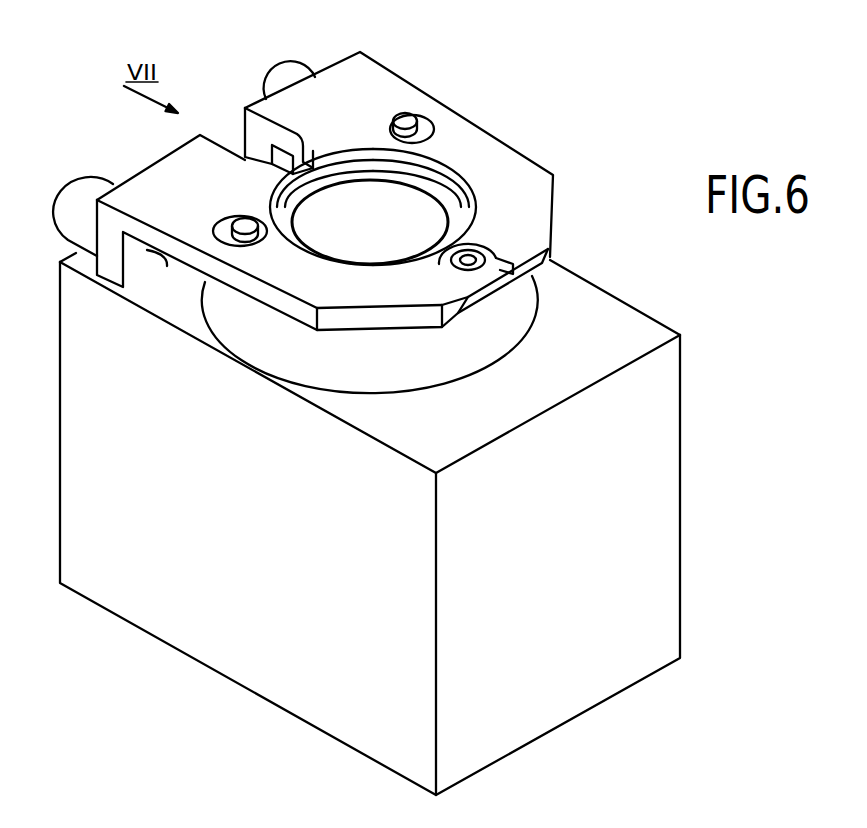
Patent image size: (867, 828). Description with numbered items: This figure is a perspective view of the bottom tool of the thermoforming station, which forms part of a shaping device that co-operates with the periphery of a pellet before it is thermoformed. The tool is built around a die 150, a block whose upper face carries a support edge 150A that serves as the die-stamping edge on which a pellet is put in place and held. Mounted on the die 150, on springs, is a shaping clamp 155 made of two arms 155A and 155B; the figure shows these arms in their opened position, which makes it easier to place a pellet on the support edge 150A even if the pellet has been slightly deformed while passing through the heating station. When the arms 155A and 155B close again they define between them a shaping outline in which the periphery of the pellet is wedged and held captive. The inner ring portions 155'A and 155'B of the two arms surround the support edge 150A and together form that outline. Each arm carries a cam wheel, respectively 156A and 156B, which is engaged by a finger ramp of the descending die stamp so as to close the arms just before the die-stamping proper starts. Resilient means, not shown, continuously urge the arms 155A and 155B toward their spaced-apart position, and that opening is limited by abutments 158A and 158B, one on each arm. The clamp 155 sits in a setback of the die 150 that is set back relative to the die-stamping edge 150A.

The die 150 is at (657, 515).
The support edge 150A is at (373, 170).
The shaping clamp 155 is at (330, 213).
The arm of the shaping clamp 155A is at (520, 178).
The arm of the shaping clamp 155B is at (320, 286).
The ring portion of upper clamp plate 155'A is at (475, 177).
The ring portion of lower clamp plate 155'B is at (264, 207).
The cam wheel 156A is at (289, 80).
The cam wheel 156B is at (80, 204).
The abutment 158A is at (409, 130).
The abutment 158B is at (218, 230).